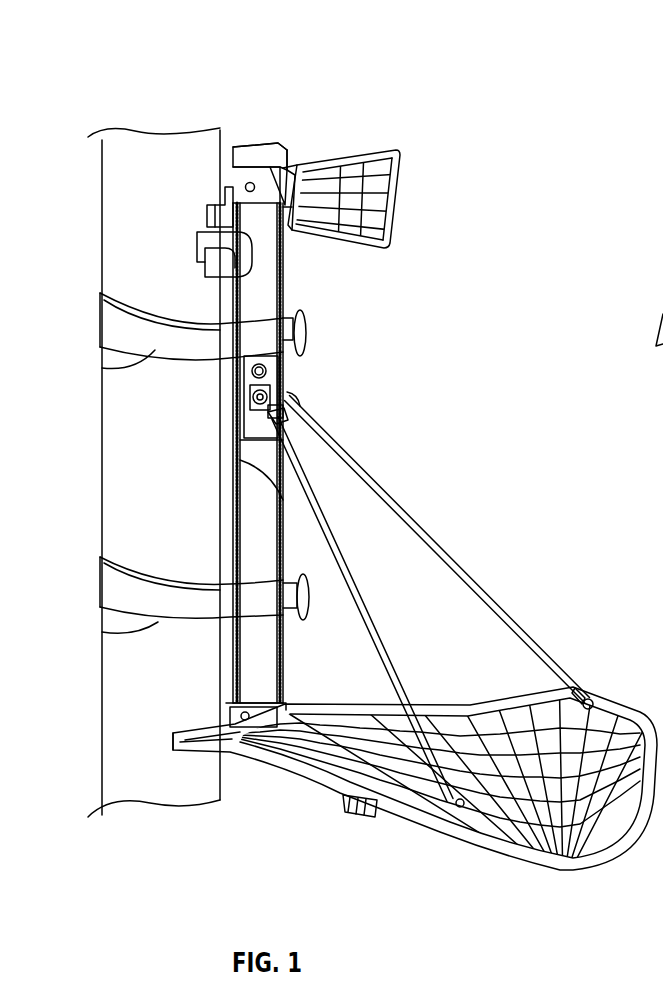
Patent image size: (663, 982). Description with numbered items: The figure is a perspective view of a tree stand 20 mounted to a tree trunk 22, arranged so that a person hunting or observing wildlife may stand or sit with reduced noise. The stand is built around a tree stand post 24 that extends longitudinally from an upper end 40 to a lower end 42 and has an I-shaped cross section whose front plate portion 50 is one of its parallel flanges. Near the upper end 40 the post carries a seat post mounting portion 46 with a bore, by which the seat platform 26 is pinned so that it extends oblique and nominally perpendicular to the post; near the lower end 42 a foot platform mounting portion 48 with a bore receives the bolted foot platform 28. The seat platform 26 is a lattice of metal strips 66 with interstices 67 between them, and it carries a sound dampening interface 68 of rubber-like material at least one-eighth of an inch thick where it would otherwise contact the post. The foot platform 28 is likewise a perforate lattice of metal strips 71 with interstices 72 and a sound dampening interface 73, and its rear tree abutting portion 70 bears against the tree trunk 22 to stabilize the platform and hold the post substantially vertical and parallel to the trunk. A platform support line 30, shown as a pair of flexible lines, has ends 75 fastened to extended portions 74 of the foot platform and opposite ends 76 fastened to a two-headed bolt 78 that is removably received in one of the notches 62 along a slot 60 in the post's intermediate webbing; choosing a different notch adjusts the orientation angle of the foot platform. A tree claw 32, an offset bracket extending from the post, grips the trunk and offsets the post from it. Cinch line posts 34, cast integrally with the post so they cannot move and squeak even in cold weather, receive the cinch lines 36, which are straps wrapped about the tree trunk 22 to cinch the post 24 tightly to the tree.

The tree stand 20 is at (252, 140).
The tree trunk 22 is at (100, 238).
The tree stand post 24 is at (238, 150).
The seat platform 26 is at (368, 212).
The foot platform 28 is at (418, 752).
The platform support line 30 is at (462, 576).
The tree claw 32 is at (205, 272).
The cinch line posts 34 is at (308, 335).
The cinch lines 36 is at (153, 352).
The upper end 40 is at (287, 140).
The lower end 42 is at (240, 762).
The seat post mounting portion 46 is at (232, 159).
The foot platform mounting portion 48 is at (268, 745).
The front plate portion 50 is at (285, 520).
The slot 60 is at (244, 380).
The notches 62 is at (268, 368).
The metal strips 66 is at (372, 162).
The interstices 67 is at (384, 193).
The sound dampening interface 68 is at (391, 158).
The rear tree abutting portion 70 is at (243, 726).
The metal strips 71 is at (440, 707).
The interstices 72 is at (386, 713).
The sound dampening interface 73 is at (490, 705).
The extended portions 74 is at (579, 690).
The ends 75 is at (589, 700).
The opposite ends 76 is at (299, 437).
The two-headed bolt 78 is at (245, 500).